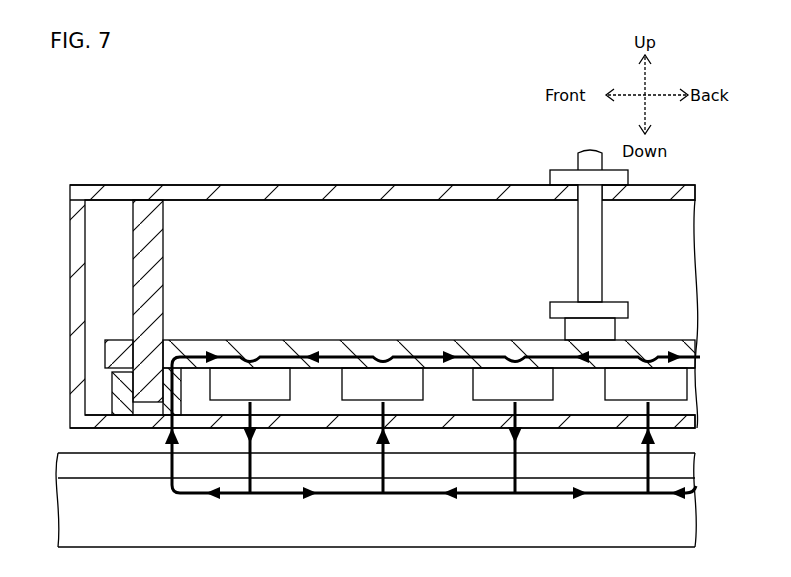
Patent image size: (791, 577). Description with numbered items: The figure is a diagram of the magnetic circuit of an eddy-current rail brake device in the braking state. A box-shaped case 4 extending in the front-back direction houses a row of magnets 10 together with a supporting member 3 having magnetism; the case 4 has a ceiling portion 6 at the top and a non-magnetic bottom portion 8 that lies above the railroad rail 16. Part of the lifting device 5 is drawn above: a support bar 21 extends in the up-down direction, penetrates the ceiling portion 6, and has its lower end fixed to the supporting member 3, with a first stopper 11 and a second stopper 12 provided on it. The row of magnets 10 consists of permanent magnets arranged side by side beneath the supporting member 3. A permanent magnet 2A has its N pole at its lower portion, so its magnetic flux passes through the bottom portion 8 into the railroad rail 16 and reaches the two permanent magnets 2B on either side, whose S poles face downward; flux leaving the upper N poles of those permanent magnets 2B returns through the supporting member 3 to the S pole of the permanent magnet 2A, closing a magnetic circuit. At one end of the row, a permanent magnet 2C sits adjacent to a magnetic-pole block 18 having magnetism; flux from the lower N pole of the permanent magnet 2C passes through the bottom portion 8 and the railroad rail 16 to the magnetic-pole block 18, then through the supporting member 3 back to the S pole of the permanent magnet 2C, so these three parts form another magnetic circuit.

The permanent magnet 2A is at (490, 380).
The permanent magnet 2B is at (405, 380).
The permanent magnet 2C is at (230, 372).
The supporting member 3 is at (298, 342).
The case 4 is at (166, 154).
The lifting device 5 is at (472, 154).
The ceiling portion 6 is at (335, 186).
The bottom portion 8 is at (690, 414).
The row of magnets 10 is at (353, 380).
The first stopper 11 is at (550, 305).
The second stopper 12 is at (550, 172).
The railroad rail 16 is at (70, 474).
The magnetic-pole block 18 is at (112, 385).
The support bar 21 is at (578, 230).